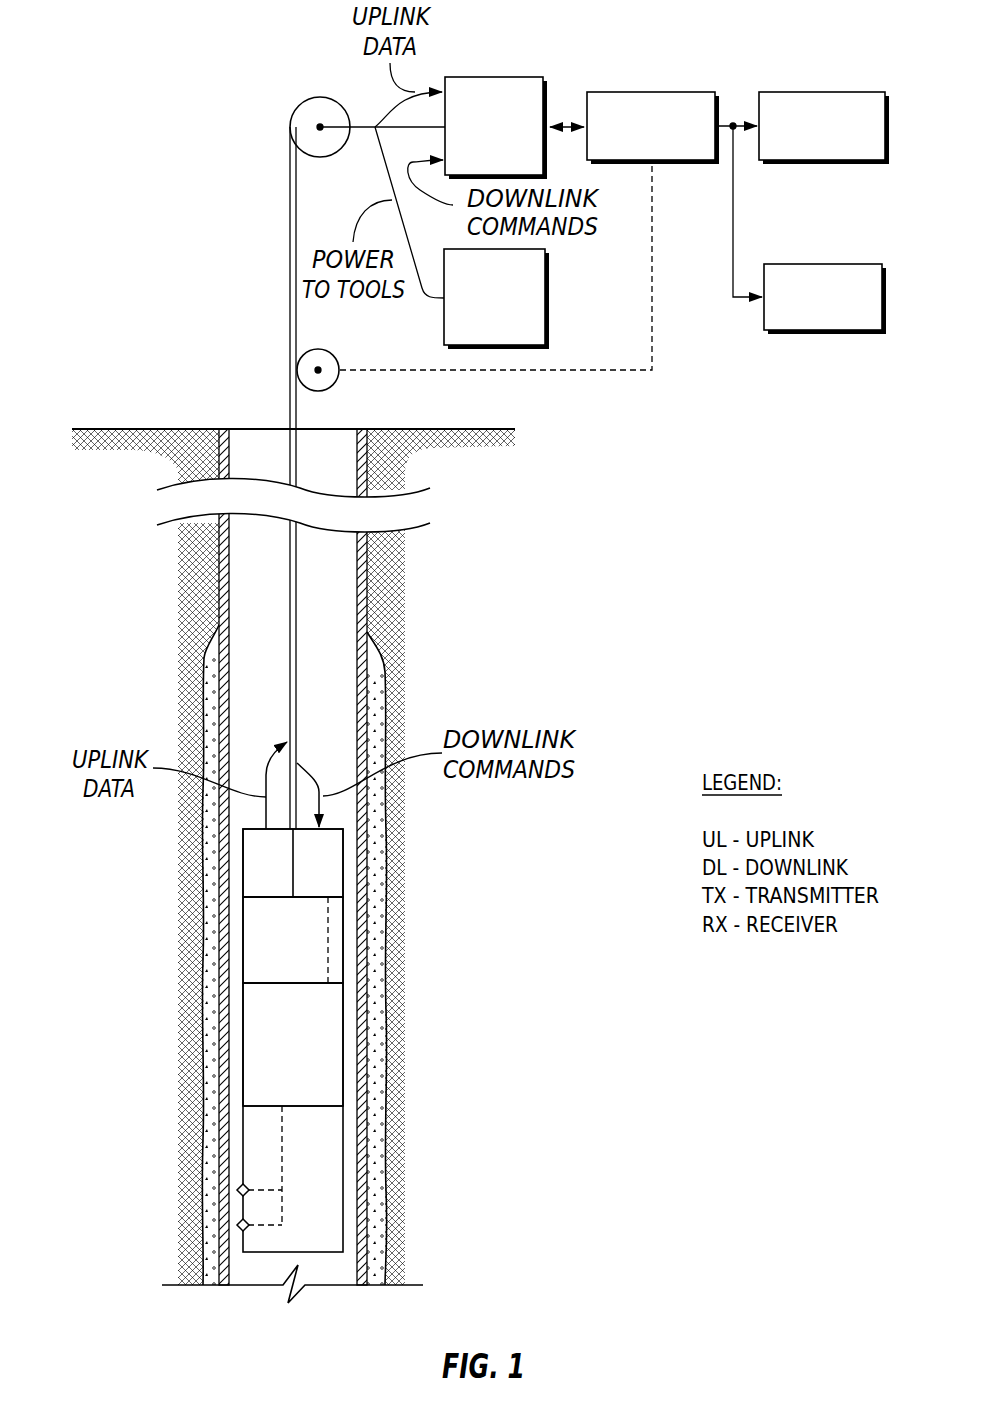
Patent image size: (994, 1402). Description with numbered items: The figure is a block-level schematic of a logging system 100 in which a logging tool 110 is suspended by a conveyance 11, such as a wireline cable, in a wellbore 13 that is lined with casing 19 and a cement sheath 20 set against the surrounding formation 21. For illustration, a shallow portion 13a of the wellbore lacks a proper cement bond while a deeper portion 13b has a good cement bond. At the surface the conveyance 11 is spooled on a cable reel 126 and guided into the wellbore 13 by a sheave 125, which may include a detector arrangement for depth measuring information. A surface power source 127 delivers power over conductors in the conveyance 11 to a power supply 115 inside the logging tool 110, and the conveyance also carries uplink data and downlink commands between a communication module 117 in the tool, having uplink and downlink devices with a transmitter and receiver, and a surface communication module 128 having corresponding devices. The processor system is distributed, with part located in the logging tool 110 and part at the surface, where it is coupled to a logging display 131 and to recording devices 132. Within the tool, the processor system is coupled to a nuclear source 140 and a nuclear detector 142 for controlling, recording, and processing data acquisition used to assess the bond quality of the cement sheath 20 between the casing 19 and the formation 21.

The logging system 100 is at (152, 55).
The conveyance 11 is at (290, 586).
The wellbore 13 is at (327, 606).
The shallow portion of wellbore 13a is at (168, 650).
The deeper portion of wellbore 13b is at (168, 1077).
The casing 19 is at (365, 637).
The cement sheath 20 is at (385, 670).
The formation 21 is at (405, 860).
The logging tool 110 is at (345, 948).
The power supply 115 is at (243, 955).
The communication module 117 is at (243, 862).
The sheave 125 is at (317, 391).
The cable reel 126 is at (320, 97).
The power source 127 is at (444, 318).
The surface communication module 128 is at (492, 77).
The logging display 131 is at (822, 264).
The recording devices 132 is at (822, 92).
The nuclear source 140 is at (237, 1190).
The nuclear detector 142 is at (237, 1225).